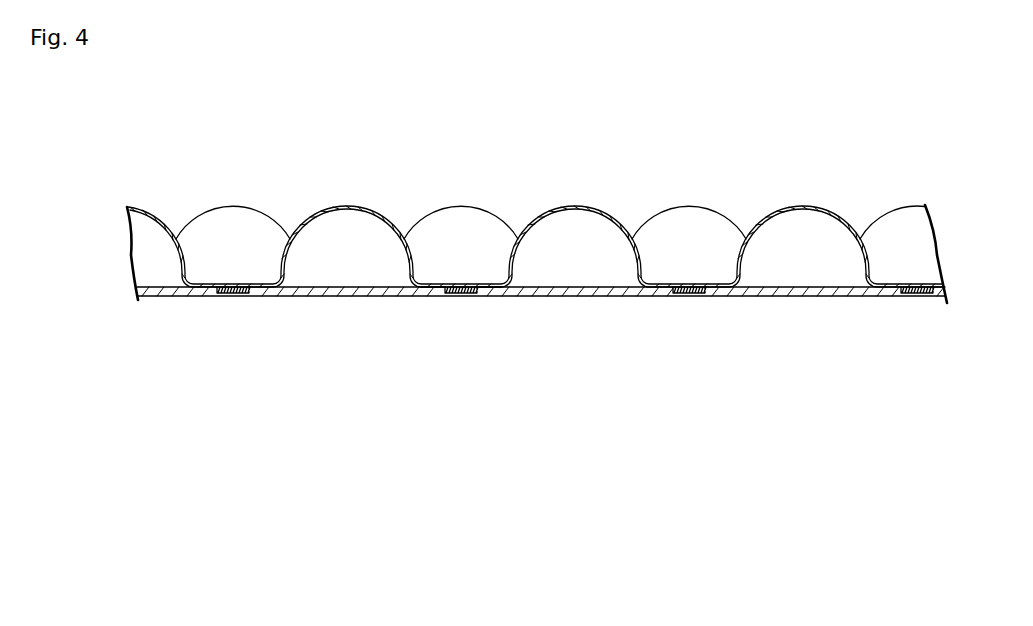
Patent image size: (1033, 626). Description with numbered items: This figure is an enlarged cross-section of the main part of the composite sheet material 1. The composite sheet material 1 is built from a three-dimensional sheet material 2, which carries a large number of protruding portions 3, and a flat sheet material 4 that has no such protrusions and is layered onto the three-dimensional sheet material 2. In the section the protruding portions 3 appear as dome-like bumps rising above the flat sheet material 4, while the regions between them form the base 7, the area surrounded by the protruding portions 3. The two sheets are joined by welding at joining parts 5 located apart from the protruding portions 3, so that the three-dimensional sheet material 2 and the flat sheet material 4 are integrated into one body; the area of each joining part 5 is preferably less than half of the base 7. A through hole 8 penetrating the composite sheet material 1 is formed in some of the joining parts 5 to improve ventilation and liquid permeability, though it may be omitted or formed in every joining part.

The composite sheet material 1 is at (763, 183).
The three-dimensional sheet material 2 is at (202, 213).
The protruding portions 3 is at (333, 208).
The flat sheet material 4 is at (347, 296).
The joining parts 5 is at (670, 296).
The base 7 is at (492, 287).
The through hole 8 is at (688, 296).